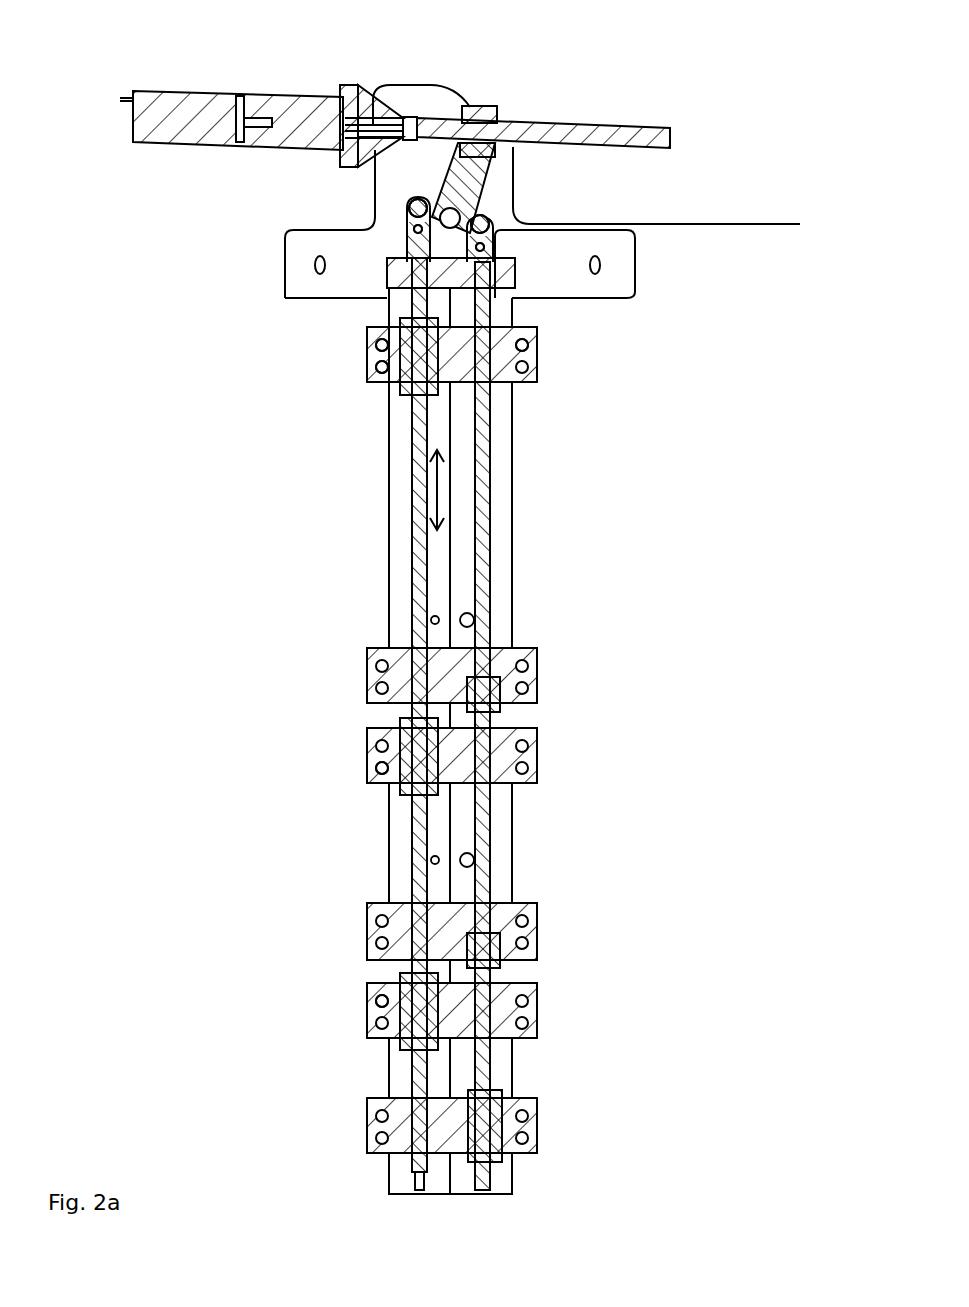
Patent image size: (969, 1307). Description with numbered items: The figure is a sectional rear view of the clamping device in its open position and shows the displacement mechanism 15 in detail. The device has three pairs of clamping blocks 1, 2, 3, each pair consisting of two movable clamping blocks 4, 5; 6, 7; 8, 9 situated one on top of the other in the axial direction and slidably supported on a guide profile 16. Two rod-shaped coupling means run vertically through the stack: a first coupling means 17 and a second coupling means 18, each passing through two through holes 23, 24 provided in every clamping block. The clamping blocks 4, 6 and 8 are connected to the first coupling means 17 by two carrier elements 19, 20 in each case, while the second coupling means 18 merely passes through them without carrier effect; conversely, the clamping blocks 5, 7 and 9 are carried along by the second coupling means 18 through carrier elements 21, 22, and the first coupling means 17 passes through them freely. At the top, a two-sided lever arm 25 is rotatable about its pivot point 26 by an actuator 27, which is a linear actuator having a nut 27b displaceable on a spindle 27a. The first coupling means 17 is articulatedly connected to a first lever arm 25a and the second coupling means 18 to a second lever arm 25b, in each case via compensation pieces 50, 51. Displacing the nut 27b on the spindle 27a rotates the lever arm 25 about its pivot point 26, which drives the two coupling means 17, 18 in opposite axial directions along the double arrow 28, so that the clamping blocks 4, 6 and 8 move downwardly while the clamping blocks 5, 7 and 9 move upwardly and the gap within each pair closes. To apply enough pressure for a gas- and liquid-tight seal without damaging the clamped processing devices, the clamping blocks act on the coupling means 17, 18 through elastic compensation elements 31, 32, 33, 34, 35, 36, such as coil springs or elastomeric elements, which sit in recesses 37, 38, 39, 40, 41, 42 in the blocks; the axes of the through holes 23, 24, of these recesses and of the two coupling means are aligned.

The pair of clamping blocks 1 is at (370, 395).
The pair of clamping blocks 2 is at (360, 790).
The pair of clamping blocks 3 is at (370, 1050).
The movable clamping block 4 is at (545, 367).
The movable clamping block 5 is at (545, 678).
The movable clamping block 6 is at (545, 770).
The movable clamping block 7 is at (520, 925).
The movable clamping block 8 is at (545, 1030).
The movable clamping block 9 is at (535, 1122).
The displacement mechanism 15 is at (620, 169).
The guide profile 16 is at (520, 548).
The first coupling means 17 is at (412, 630).
The second coupling means 18 is at (500, 840).
The carrier element 19 is at (400, 322).
The carrier element 20 is at (400, 408).
The carrier element 21 is at (490, 650).
The carrier element 22 is at (507, 712).
The through hole 23 is at (405, 383).
The through hole 24 is at (537, 332).
The two-sided lever arm 25 is at (460, 183).
The first lever arm 25a is at (300, 207).
The second lever arm 25b is at (493, 224).
The pivot point 26 is at (230, 204).
The actuator 27 is at (284, 102).
The spindle 27a is at (572, 124).
The nut 27b is at (490, 106).
The double arrow 28 is at (445, 490).
The elastic compensation element 31 is at (380, 338).
The elastic compensation element 32 is at (505, 680).
The elastic compensation element 33 is at (398, 742).
The elastic compensation element 34 is at (505, 952).
The elastic compensation element 35 is at (405, 985).
The elastic compensation element 36 is at (505, 1155).
The recess 37 is at (395, 352).
The recess 38 is at (500, 695).
The recess 39 is at (380, 757).
The recess 40 is at (500, 940).
The recess 41 is at (378, 990).
The recess 42 is at (505, 1142).
The compensation piece 50 is at (410, 214).
The compensation piece 51 is at (497, 235).